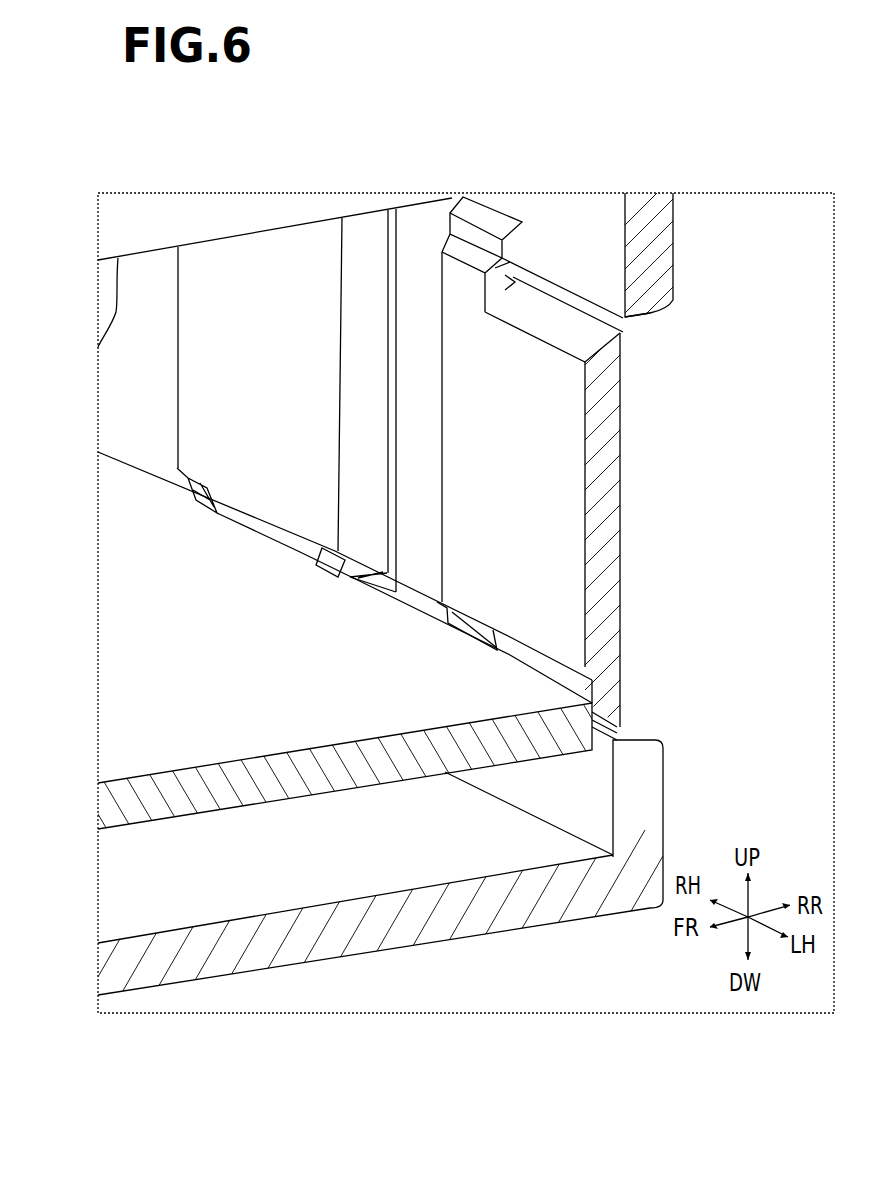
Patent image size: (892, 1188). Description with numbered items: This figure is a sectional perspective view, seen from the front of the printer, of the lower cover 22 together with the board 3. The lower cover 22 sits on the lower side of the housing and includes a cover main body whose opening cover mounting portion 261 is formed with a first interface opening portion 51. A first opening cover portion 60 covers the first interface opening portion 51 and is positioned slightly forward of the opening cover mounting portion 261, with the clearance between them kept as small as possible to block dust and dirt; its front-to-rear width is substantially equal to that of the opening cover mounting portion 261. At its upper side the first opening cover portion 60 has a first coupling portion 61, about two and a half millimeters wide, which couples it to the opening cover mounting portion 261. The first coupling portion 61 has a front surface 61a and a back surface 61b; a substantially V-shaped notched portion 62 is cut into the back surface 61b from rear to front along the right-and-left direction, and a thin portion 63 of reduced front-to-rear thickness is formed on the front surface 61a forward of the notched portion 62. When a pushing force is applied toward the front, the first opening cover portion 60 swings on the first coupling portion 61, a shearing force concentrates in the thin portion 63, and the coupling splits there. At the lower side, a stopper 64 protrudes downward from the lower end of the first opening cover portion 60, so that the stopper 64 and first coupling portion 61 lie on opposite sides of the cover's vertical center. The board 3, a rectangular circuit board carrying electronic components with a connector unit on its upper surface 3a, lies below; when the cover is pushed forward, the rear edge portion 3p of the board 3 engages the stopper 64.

The board 3 is at (160, 603).
The upper surface 3a is at (130, 693).
The rear edge portion 3p is at (627, 737).
The lower cover 22 is at (160, 880).
The first interface opening portion 51 is at (638, 320).
The first opening cover portion 60 is at (195, 370).
The first coupling portion 61 is at (517, 247).
The front surface 61a is at (450, 277).
The back surface 61b is at (528, 248).
The notched portion 62 is at (503, 282).
The thin portion 63 is at (503, 283).
The stopper 64 is at (262, 528).
The opening cover mounting portion 261 is at (603, 243).